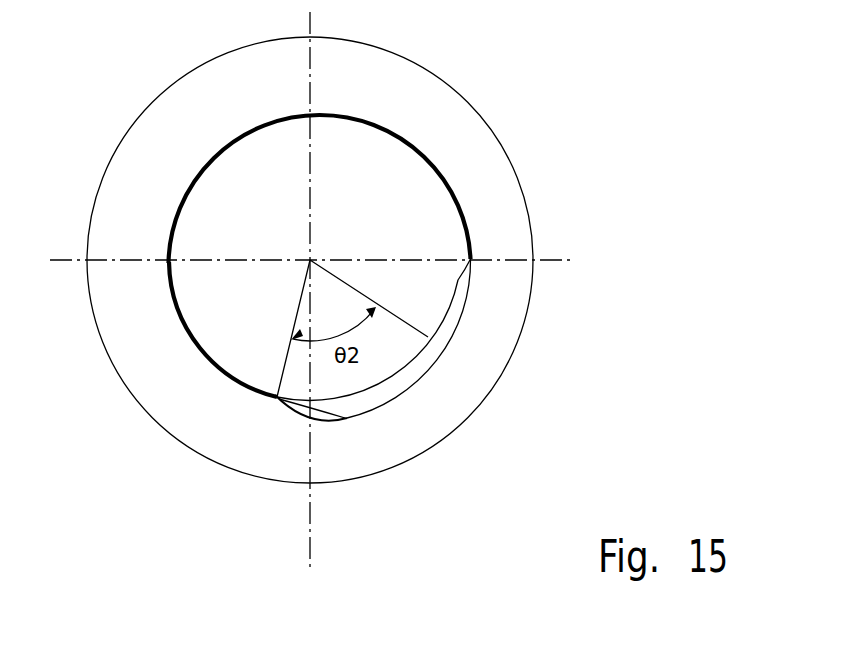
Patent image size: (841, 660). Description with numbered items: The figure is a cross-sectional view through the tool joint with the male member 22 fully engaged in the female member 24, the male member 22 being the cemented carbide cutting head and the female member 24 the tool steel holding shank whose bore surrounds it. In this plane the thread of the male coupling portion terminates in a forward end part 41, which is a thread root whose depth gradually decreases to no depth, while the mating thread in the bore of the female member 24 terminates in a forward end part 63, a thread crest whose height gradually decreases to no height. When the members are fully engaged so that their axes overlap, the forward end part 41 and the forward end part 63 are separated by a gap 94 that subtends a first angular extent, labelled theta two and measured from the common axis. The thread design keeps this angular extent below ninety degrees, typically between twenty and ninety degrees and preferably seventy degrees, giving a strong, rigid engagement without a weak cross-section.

The male member 22 is at (378, 179).
The female member 24 is at (475, 172).
The forward end part 41 is at (460, 280).
The gap 94 is at (407, 377).
The forward end part 63 is at (337, 415).